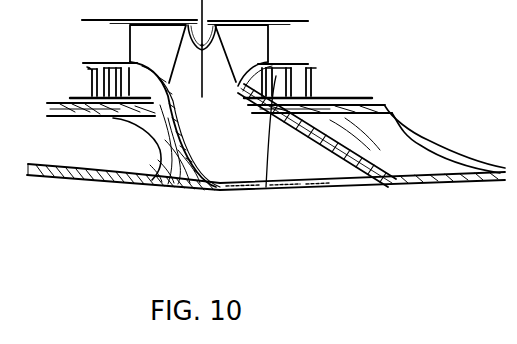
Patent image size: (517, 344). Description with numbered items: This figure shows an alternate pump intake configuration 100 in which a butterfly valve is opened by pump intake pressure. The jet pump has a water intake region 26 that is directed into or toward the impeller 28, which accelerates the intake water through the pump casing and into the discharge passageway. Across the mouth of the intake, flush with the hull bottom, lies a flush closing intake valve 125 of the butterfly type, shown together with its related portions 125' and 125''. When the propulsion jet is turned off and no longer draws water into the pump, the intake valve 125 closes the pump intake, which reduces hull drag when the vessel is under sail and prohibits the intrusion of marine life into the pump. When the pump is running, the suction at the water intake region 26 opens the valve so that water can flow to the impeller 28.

The impeller 28 is at (201, 58).
The water intake region 26 is at (222, 187).
The flush closing intake valve 125 is at (164, 208).
The bottom plate right section 125' is at (362, 197).
The inclined plate section 125'' is at (322, 164).
The nozzle assembly 100 is at (106, 250).